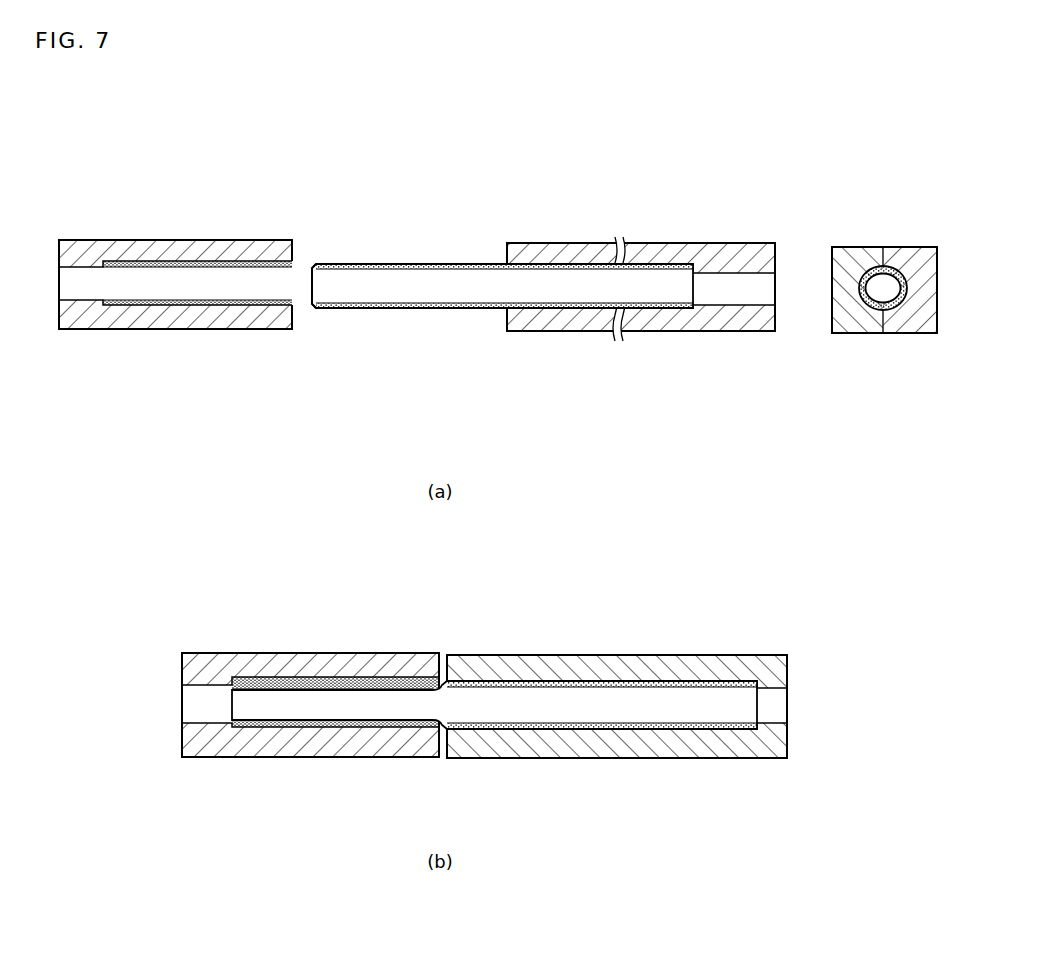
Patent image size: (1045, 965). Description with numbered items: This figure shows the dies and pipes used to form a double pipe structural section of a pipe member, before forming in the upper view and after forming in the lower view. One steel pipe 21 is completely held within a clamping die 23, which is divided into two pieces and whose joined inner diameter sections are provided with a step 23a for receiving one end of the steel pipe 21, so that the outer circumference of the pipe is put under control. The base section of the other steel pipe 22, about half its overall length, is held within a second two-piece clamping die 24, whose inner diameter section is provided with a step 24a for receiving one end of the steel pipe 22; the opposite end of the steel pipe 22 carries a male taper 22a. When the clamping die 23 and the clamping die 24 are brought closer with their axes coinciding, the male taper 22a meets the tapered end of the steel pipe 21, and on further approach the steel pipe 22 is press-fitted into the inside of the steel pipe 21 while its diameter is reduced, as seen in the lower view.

The steel pipe 21 is at (200, 262).
The steel pipe 22 is at (455, 266).
The male taper 22a is at (314, 262).
The clamping die 23 is at (190, 325).
The step 23a is at (112, 306).
The clamping die 24 is at (567, 326).
The step 24a is at (680, 312).